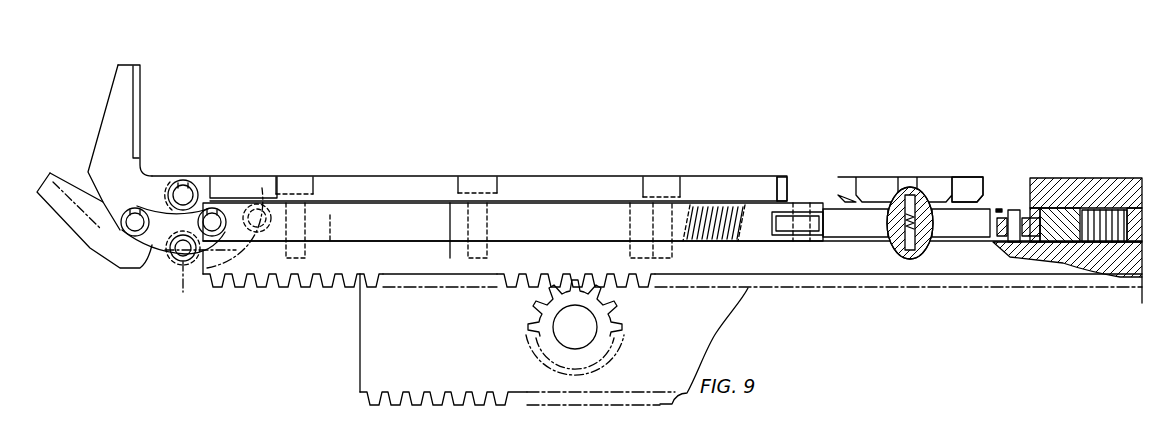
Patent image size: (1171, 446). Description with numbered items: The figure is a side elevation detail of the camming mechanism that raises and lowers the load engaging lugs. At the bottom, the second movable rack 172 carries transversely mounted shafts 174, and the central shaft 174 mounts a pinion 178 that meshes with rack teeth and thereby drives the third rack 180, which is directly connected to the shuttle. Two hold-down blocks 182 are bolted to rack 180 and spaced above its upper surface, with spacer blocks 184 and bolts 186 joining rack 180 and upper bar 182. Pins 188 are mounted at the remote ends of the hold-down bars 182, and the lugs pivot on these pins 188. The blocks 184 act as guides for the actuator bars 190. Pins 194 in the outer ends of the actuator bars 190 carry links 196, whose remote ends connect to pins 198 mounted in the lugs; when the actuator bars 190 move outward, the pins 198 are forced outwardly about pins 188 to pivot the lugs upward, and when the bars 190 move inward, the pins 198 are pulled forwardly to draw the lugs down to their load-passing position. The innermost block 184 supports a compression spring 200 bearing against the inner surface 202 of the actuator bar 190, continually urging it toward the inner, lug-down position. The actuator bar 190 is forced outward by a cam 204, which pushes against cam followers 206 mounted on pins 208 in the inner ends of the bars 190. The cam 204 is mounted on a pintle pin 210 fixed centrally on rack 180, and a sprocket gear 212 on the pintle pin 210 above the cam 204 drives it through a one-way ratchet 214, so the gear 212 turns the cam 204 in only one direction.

The second movable rack 172 is at (377, 376).
The shaft 174 is at (583, 332).
The pinion 178 is at (530, 314).
The third rack 180 is at (333, 272).
The hold-down block 182 is at (437, 190).
The spacer block 184 is at (333, 213).
The bolt 186 is at (505, 203).
The pin 188 is at (180, 190).
The actuator bar 190 is at (563, 220).
The pin 194 is at (283, 185).
The link 196 is at (178, 262).
The pin 198 is at (120, 232).
The compression spring 200 is at (703, 222).
The inner surface 202 is at (743, 225).
The cam 204 is at (853, 227).
The cam follower 206 is at (818, 218).
The pin 208 is at (800, 210).
The pintle pin 210 is at (918, 258).
The sprocket gear 212 is at (968, 185).
The ratchet 214 is at (945, 207).